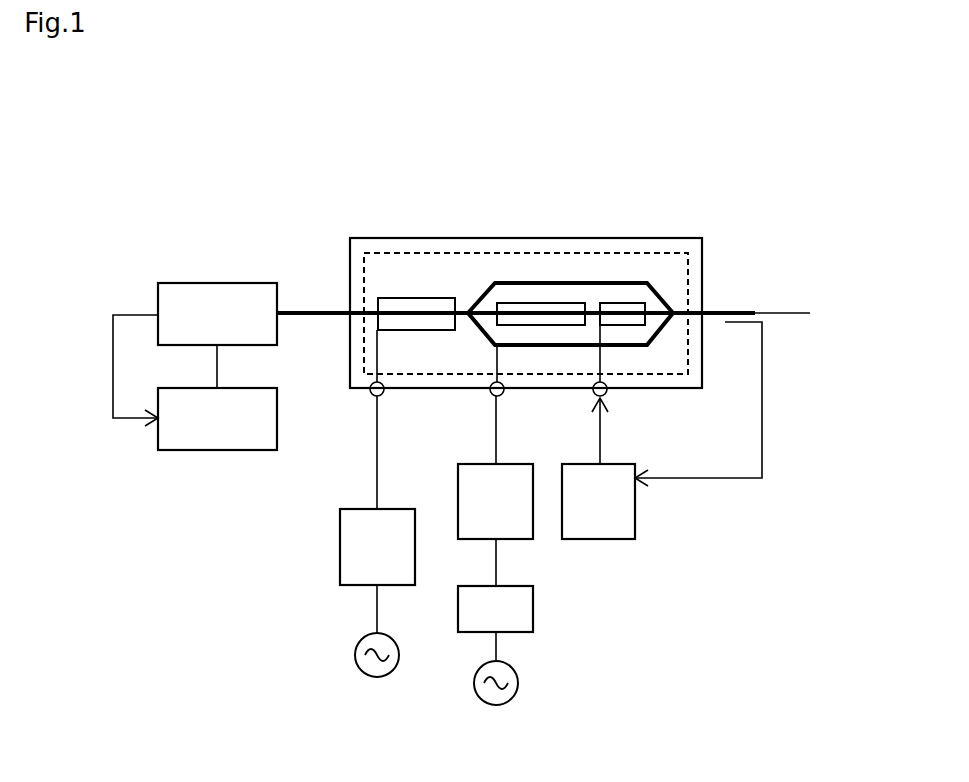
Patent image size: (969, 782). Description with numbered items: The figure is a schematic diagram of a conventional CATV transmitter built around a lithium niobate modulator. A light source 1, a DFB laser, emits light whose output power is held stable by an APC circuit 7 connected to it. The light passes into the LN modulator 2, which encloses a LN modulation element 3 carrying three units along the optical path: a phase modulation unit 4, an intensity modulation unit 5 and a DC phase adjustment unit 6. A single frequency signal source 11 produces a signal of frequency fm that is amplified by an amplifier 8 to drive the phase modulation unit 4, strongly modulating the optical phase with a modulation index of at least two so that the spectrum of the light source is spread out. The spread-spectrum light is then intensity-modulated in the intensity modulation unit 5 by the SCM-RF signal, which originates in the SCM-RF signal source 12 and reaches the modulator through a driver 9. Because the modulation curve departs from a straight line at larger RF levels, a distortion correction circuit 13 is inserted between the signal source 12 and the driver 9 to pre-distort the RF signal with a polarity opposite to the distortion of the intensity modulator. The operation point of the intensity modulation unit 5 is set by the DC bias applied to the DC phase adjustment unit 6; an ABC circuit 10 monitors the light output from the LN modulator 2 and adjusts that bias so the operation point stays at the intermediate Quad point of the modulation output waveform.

The light source 1 is at (247, 303).
The LN modulator 2 is at (570, 237).
The LN modulation element 3 is at (630, 253).
The phase modulation unit 4 is at (417, 298).
The intensity modulation unit 5 is at (540, 305).
The DC phase adjustment unit 6 is at (623, 315).
The APC circuit 7 is at (232, 435).
The amplifier 8 is at (355, 558).
The driver 9 is at (472, 525).
The ABC circuit 10 is at (613, 525).
The single frequency signal source 11 is at (355, 655).
The SCM-RF signal source 12 is at (518, 683).
The distortion correction circuit 13 is at (520, 619).